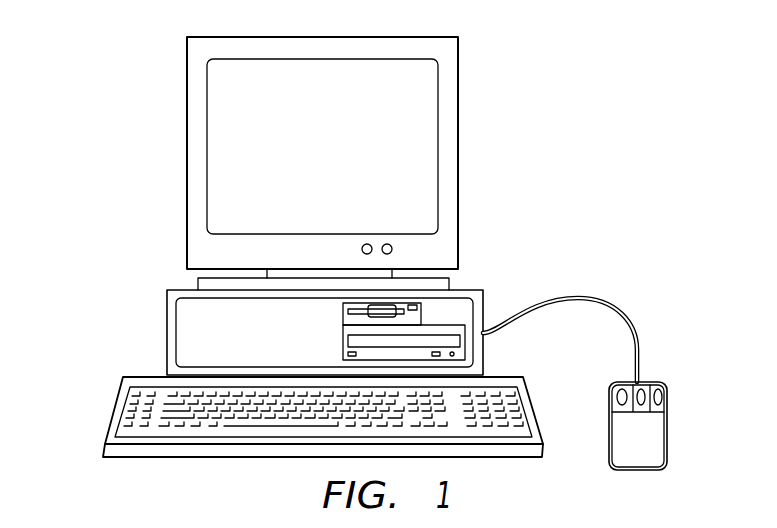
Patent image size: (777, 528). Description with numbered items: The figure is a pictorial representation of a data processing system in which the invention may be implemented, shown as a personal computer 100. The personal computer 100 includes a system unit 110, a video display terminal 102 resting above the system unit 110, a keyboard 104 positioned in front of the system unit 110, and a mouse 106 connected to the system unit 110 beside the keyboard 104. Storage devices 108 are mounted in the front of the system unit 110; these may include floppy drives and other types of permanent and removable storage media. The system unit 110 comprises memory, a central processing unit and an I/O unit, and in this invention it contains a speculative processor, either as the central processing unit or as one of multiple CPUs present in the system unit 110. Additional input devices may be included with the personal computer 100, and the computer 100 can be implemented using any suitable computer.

The personal computer 100 is at (631, 115).
The video display terminal 102 is at (459, 141).
The keyboard 104 is at (109, 413).
The mouse 106 is at (667, 426).
The storage devices 108 is at (343, 335).
The system unit 110 is at (167, 332).